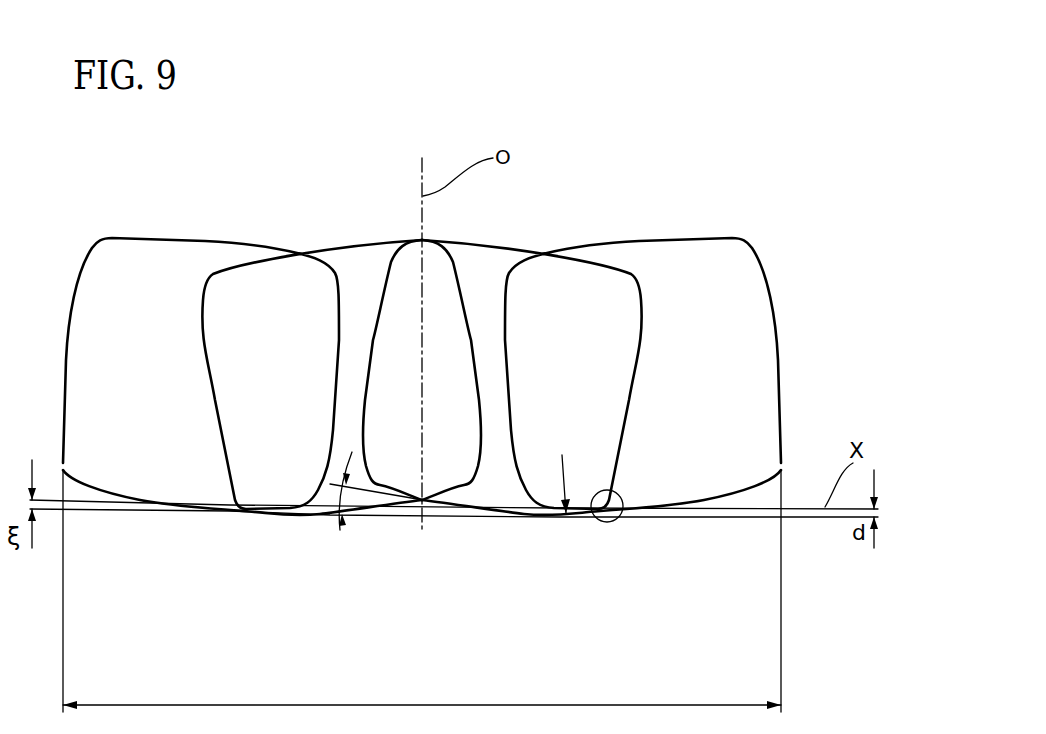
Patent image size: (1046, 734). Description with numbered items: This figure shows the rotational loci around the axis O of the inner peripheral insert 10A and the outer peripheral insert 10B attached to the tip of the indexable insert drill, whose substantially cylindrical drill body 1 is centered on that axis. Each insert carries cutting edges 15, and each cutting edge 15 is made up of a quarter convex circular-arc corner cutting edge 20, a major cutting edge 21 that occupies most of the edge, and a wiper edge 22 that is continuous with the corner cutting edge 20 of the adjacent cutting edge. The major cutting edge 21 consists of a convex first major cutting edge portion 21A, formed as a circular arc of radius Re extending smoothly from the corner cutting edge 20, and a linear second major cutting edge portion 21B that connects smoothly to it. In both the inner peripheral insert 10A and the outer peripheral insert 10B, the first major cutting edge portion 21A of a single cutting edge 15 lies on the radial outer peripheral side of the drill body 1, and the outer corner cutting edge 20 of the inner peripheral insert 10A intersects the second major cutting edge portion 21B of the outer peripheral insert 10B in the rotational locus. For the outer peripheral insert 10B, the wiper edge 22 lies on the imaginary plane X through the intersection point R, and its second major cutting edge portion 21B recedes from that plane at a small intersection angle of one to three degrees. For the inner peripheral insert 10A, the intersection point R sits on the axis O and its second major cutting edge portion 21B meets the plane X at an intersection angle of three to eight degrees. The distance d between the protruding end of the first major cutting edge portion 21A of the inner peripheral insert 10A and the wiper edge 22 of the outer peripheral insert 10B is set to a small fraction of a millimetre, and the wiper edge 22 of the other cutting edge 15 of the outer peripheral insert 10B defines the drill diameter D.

The drill body 1 is at (391, 194).
The inner peripheral insert 10A is at (497, 240).
The outer peripheral insert 10B is at (660, 243).
The cutting edge 15 is at (557, 621).
The corner cutting edge 20 is at (612, 500).
The major cutting edge 21 is at (537, 577).
The first major cutting edge portion 21A is at (553, 519).
The second major cutting edge portion 21B is at (444, 503).
The wiper edge 22 is at (782, 444).